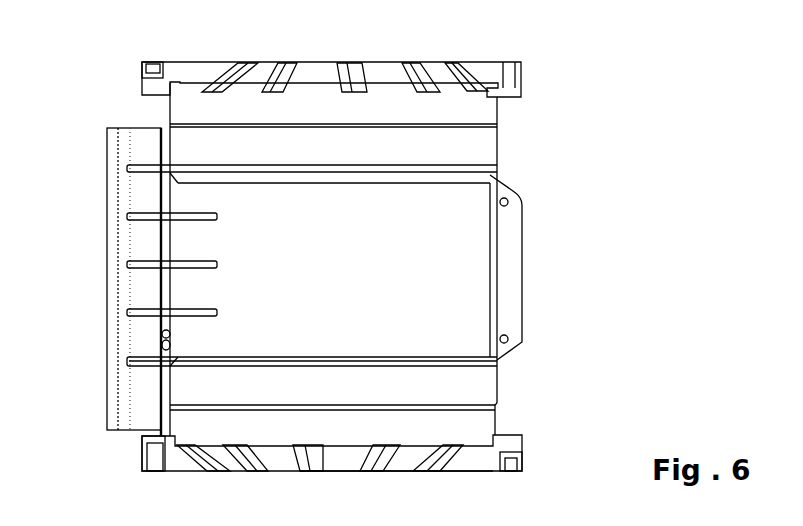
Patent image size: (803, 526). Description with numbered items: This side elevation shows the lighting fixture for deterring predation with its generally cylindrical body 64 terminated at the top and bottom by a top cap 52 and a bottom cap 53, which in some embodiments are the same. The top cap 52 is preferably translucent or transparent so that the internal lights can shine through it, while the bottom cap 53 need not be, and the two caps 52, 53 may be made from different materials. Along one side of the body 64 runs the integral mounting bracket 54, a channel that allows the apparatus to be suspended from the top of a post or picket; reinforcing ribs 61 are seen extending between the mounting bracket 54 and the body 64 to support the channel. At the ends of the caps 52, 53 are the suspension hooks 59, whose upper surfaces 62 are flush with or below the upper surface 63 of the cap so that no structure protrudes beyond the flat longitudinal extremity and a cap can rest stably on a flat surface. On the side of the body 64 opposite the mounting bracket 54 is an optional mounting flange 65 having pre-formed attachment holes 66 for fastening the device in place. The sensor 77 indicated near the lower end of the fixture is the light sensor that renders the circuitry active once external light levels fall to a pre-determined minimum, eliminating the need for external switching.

The top cap 52 is at (487, 107).
The bottom cap 53 is at (475, 427).
The mounting bracket 54 is at (120, 128).
The suspension hooks 59 is at (522, 72).
The reinforcing ribs 61 is at (190, 313).
The upper surfaces of the hooks 62 is at (300, 473).
The upper surface of the cap 63 is at (383, 63).
The generally cylindrical body 64 is at (455, 213).
The mounting flange 65 is at (508, 278).
The mounting hole 66 is at (508, 339).
The sensor 77 is at (396, 498).